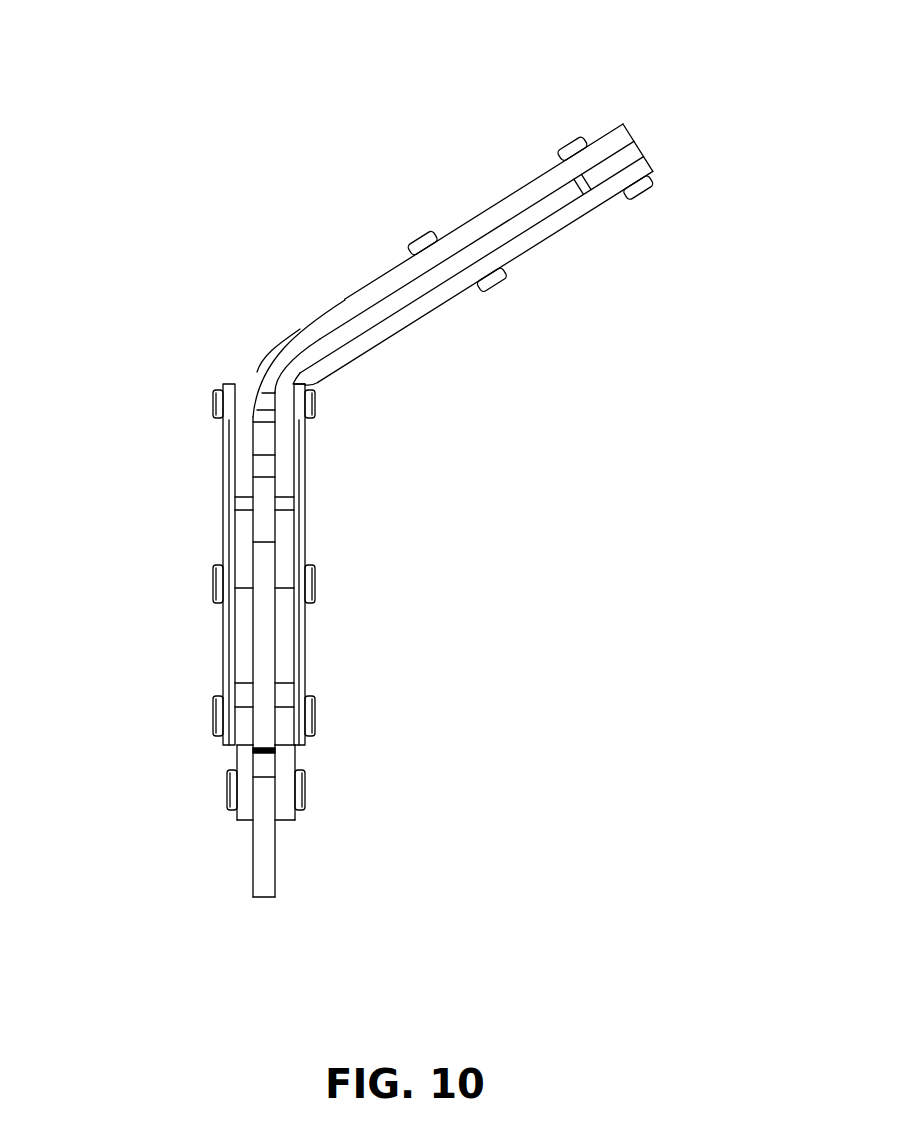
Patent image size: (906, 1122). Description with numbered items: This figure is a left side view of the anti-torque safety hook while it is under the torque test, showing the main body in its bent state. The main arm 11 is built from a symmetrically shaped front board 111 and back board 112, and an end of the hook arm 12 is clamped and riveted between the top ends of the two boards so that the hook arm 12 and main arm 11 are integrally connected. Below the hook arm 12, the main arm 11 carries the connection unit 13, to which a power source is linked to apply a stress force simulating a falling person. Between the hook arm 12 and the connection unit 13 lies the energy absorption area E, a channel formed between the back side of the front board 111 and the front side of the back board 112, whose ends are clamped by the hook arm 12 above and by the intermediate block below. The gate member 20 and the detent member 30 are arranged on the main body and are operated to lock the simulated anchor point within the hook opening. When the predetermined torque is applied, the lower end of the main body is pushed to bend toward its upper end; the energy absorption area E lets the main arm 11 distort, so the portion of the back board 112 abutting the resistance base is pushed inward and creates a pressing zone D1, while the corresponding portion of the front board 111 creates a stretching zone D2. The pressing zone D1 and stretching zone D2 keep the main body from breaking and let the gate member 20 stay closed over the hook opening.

The main arm 11 is at (504, 124).
The hook arm 12 is at (644, 144).
The back board 112 is at (477, 214).
The front board 111 is at (534, 250).
The energy absorption area E is at (377, 290).
The pressing zone D1 is at (308, 392).
The stretching zone D2 is at (258, 368).
The gate member 20 is at (203, 505).
The detent member 30 is at (263, 623).
The connection unit 13 is at (228, 862).